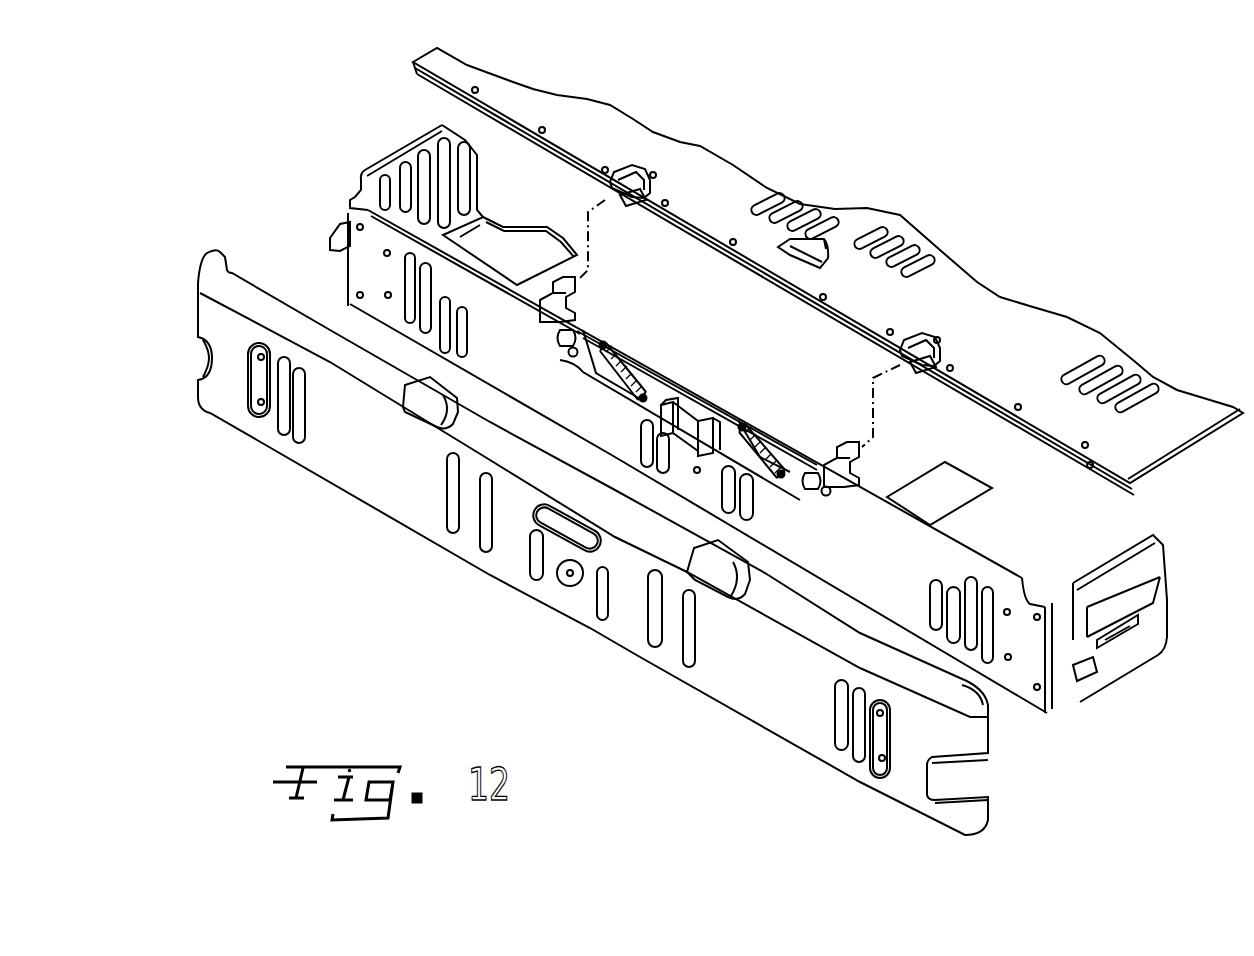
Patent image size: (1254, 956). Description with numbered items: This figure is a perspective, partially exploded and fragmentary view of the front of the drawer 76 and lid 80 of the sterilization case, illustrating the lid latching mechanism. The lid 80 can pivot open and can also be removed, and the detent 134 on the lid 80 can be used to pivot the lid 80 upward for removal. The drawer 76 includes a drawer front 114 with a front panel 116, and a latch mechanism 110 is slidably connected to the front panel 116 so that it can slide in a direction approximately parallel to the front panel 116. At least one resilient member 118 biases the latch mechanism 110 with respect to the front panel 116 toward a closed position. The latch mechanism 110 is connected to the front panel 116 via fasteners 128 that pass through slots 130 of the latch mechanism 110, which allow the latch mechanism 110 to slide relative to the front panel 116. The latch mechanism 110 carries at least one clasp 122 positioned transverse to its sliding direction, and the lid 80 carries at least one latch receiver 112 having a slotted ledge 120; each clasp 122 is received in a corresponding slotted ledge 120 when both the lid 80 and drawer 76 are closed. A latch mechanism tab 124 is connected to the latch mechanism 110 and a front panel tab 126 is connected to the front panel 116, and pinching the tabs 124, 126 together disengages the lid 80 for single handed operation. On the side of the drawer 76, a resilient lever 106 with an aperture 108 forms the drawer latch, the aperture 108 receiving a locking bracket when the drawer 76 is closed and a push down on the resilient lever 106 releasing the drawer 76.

The drawer 76 is at (1153, 545).
The lid 80 is at (978, 290).
The resilient lever 106 is at (332, 236).
The aperture 108 is at (1113, 653).
The latch mechanism 110 is at (660, 380).
The latch receiver 112 is at (645, 178).
The drawer front 114 is at (398, 488).
The front panel 116 is at (378, 312).
The resilient member 118 is at (633, 378).
The slotted ledge 120 is at (633, 197).
The clasp 122 is at (573, 295).
The latch mechanism tab 124 is at (727, 407).
The front panel tab 126 is at (727, 410).
The fastener 128 is at (571, 356).
The slot 130 is at (555, 340).
The detent 134 is at (812, 240).